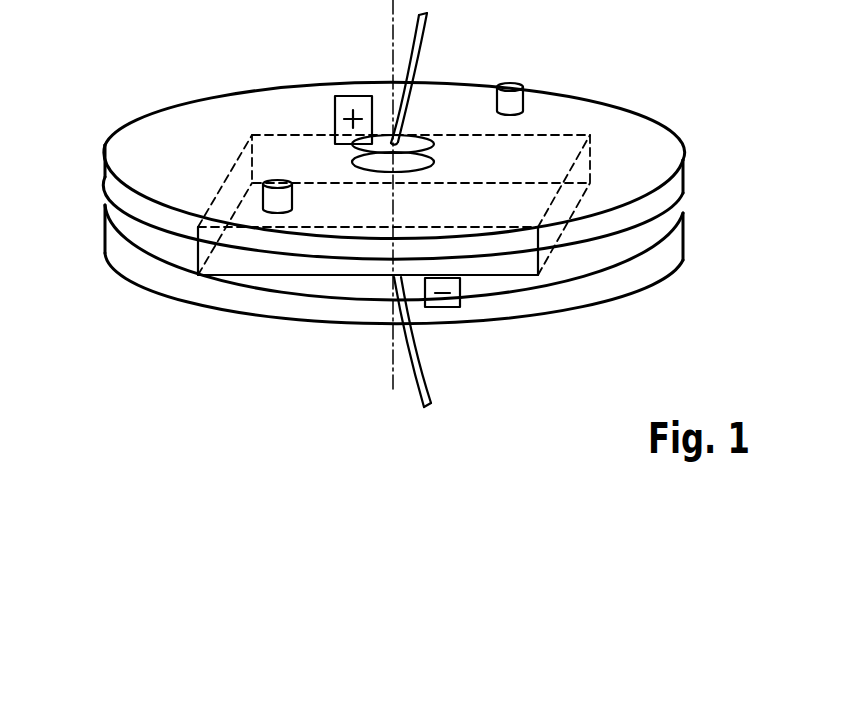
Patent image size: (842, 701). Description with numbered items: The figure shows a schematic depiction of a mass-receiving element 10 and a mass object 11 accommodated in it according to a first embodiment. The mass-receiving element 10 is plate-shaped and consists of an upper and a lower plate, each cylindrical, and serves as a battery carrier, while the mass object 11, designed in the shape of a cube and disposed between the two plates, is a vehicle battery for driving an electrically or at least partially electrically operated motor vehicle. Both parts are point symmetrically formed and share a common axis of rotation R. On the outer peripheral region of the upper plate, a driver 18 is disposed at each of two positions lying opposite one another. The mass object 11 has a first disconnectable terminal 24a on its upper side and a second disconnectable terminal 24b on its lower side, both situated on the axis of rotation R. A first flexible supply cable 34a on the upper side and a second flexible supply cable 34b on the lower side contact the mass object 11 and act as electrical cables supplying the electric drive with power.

The mass-receiving element 10 is at (651, 137).
The mass object 11 is at (267, 266).
The driver 18 is at (263, 197).
The first disconnectable terminal 24a is at (347, 100).
The second disconnectable terminal 24b is at (453, 297).
The first flexible supply cable 34a is at (428, 45).
The second flexible supply cable 34b is at (431, 393).
The axis of rotation R is at (392, 22).